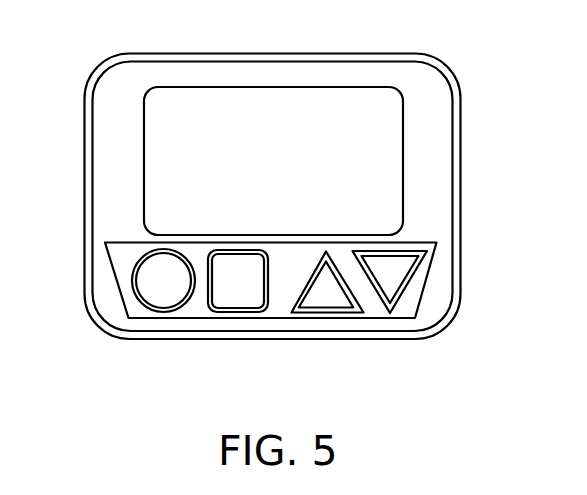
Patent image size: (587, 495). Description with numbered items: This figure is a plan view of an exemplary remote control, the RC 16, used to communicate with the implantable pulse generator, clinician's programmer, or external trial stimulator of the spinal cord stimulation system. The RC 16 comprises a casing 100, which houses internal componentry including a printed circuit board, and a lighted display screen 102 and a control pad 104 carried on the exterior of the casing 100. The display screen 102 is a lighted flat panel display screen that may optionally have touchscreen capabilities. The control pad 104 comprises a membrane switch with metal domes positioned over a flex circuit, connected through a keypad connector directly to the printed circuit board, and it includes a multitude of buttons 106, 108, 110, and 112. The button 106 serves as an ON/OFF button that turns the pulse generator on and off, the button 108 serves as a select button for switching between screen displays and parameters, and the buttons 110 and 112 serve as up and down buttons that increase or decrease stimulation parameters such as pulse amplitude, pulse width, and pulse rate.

The remote control 16 is at (446, 64).
The casing 100 is at (437, 147).
The lighted display screen 102 is at (289, 102).
The control pad 104 is at (123, 262).
The ON/OFF button 106 is at (165, 295).
The select button 108 is at (250, 295).
The up button 110 is at (333, 295).
The down button 112 is at (390, 282).